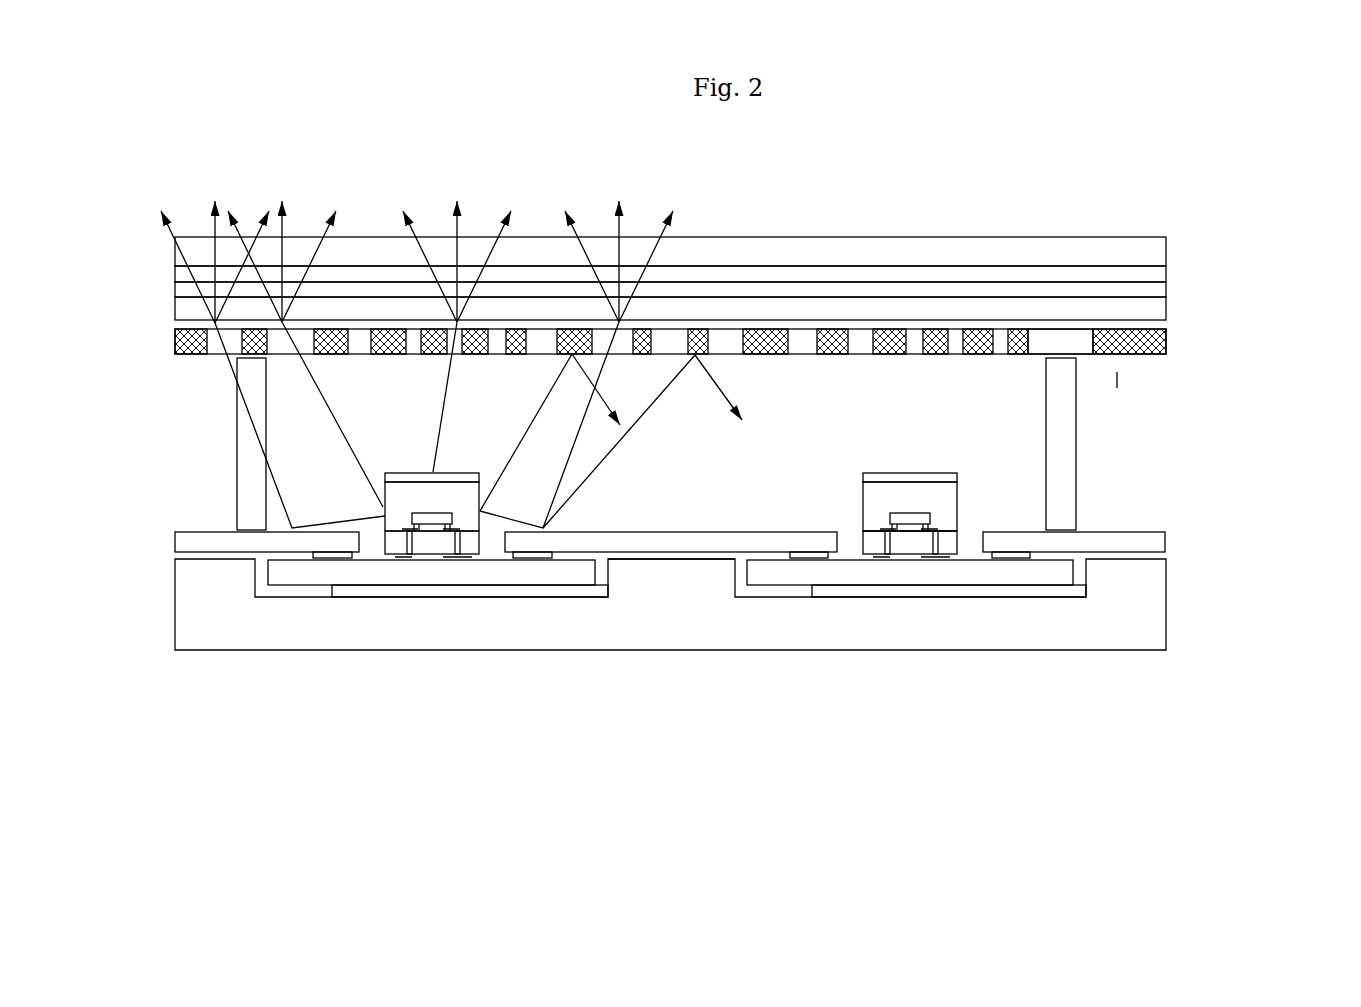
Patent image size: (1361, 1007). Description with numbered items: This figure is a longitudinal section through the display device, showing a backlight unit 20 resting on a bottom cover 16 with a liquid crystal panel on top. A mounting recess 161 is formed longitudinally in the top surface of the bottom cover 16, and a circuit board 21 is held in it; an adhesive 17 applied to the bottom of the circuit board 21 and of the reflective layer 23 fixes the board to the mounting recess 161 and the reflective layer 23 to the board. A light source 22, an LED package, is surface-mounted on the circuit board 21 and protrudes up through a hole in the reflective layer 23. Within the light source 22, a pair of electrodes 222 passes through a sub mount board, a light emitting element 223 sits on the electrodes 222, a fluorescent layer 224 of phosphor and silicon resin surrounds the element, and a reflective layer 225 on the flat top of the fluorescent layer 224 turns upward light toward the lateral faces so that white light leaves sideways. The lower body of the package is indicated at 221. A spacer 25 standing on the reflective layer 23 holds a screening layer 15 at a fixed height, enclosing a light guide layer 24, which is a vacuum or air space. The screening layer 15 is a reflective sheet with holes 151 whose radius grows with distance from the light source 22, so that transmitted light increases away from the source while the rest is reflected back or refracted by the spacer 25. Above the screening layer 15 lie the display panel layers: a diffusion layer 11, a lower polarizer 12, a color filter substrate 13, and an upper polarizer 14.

The diffusion layer 11 is at (173, 308).
The lower polarizer 12 is at (173, 289).
The color filter substrate 13 is at (173, 273).
The upper polarizer 14 is at (173, 253).
The screening layer 15 is at (173, 344).
The hole 151 is at (1073, 345).
The bottom cover 16 is at (865, 632).
The mounting recess 161 is at (752, 594).
The adhesive 17 is at (1003, 556).
The backlight unit 20 is at (761, 440).
The circuit board 21 is at (1060, 573).
The light source 22 is at (1080, 464).
The package body lower part 221 is at (950, 543).
The electrode 222 is at (955, 530).
The light emitting element 223 is at (930, 518).
The fluorescent layer 224 is at (950, 498).
The reflective layer 225 is at (957, 476).
The reflective layer 23 is at (1153, 543).
The light guide layer 24 is at (1118, 382).
The spacer 25 is at (1067, 375).